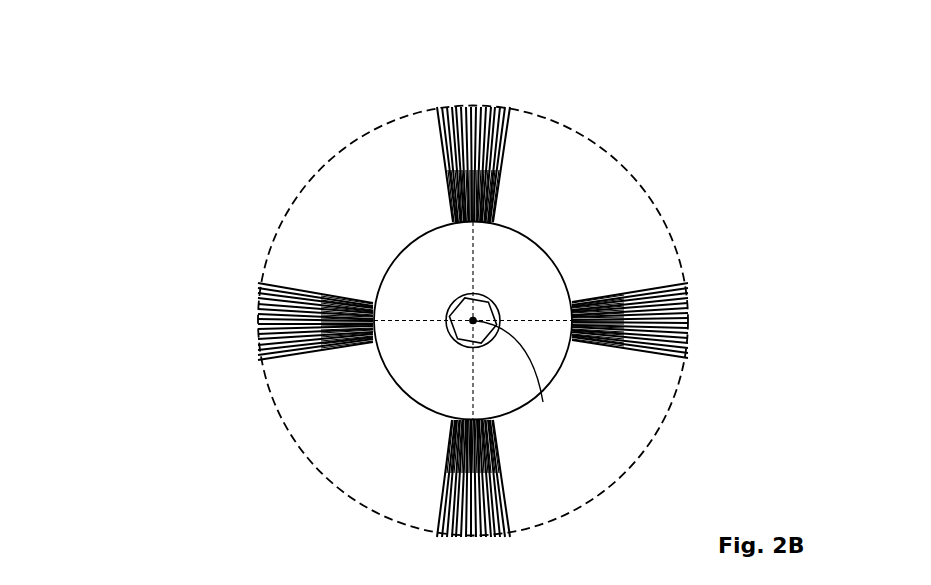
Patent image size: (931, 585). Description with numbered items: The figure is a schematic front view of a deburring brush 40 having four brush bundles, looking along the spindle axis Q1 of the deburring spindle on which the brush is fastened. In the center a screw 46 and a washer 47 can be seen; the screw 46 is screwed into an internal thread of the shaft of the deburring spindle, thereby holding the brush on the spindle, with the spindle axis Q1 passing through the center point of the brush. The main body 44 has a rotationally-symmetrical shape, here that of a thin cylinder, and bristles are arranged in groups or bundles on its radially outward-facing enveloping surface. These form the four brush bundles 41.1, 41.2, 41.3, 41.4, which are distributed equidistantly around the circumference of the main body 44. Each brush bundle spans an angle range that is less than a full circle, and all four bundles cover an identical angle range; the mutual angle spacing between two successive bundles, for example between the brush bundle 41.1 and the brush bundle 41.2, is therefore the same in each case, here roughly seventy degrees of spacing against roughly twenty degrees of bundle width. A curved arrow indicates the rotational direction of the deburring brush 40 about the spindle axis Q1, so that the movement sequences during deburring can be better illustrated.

The deburring brush 40 is at (92, 84).
The main body 44 is at (440, 392).
The screw 46 is at (467, 313).
The washer 47 is at (467, 292).
The spindle axis Q1 is at (514, 373).
The brush bundle 41.1 is at (511, 92).
The brush bundle 41.2 is at (693, 371).
The brush bundle 41.3 is at (511, 539).
The brush bundle 41.4 is at (244, 334).